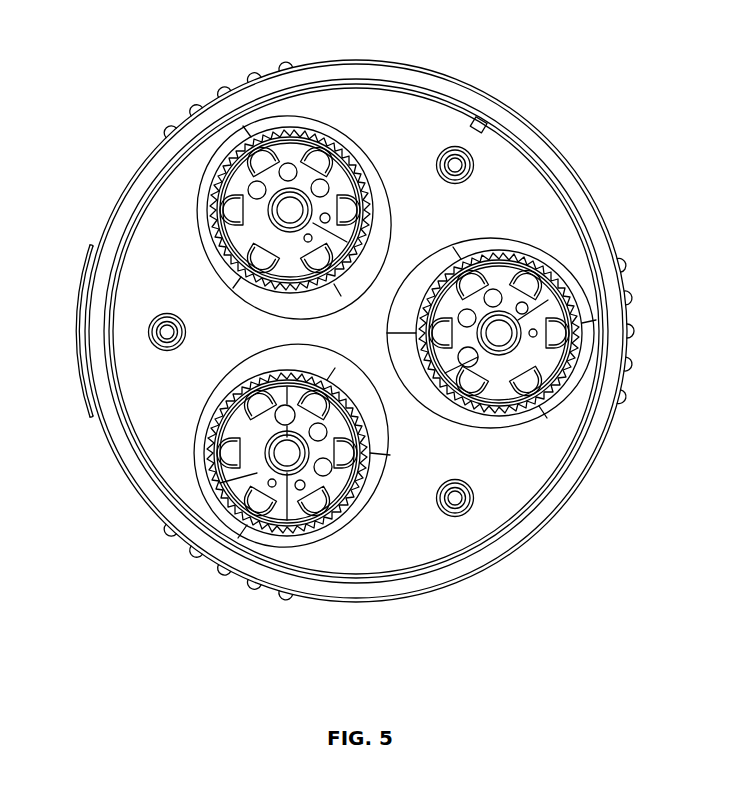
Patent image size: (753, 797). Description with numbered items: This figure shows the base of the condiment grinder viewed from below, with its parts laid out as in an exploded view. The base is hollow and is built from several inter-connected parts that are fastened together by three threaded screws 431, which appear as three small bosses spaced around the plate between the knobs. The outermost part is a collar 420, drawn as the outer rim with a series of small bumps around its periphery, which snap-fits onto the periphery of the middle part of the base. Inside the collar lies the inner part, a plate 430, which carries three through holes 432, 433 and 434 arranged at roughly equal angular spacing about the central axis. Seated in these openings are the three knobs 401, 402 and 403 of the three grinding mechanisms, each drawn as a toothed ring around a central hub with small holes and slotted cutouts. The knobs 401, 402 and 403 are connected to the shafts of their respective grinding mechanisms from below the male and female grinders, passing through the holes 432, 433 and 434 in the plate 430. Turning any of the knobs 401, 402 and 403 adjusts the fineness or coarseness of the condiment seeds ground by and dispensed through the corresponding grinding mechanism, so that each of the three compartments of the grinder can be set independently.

The knob 401 is at (264, 478).
The knob 402 is at (311, 185).
The knob 403 is at (542, 334).
The collar 420 is at (456, 578).
The plate 430 is at (538, 474).
The threaded screw 431 is at (150, 333).
The through hole 432 is at (348, 502).
The through hole 433 is at (340, 130).
The through hole 434 is at (587, 318).